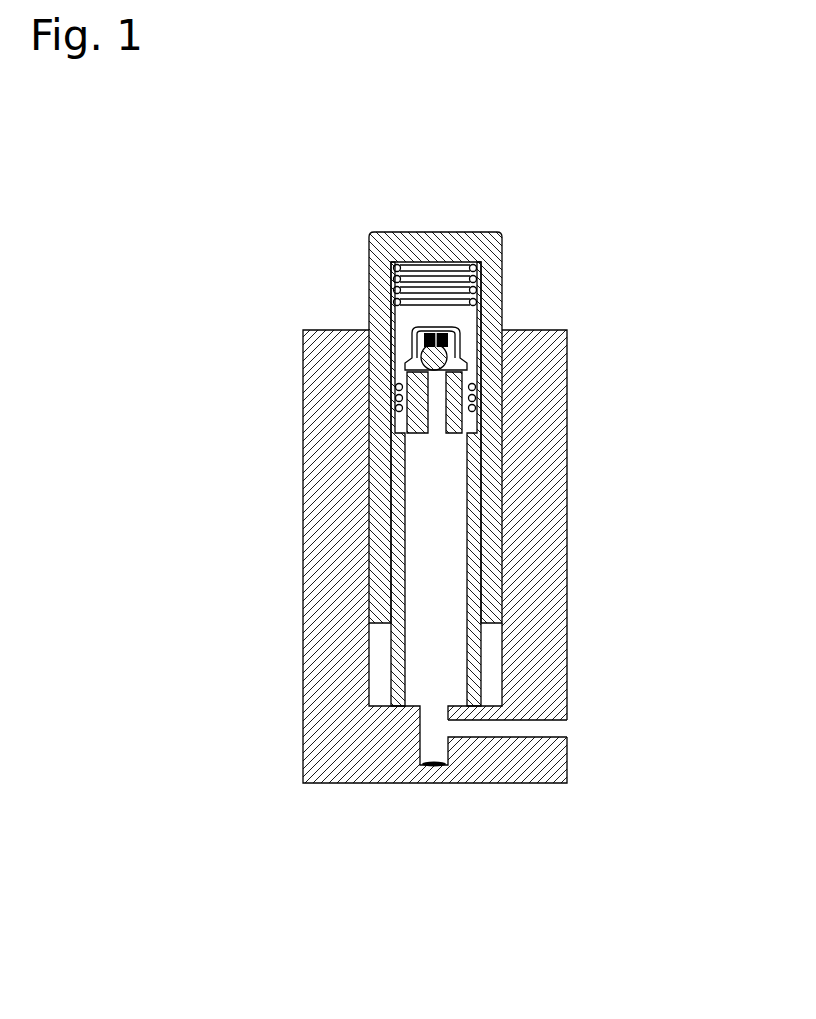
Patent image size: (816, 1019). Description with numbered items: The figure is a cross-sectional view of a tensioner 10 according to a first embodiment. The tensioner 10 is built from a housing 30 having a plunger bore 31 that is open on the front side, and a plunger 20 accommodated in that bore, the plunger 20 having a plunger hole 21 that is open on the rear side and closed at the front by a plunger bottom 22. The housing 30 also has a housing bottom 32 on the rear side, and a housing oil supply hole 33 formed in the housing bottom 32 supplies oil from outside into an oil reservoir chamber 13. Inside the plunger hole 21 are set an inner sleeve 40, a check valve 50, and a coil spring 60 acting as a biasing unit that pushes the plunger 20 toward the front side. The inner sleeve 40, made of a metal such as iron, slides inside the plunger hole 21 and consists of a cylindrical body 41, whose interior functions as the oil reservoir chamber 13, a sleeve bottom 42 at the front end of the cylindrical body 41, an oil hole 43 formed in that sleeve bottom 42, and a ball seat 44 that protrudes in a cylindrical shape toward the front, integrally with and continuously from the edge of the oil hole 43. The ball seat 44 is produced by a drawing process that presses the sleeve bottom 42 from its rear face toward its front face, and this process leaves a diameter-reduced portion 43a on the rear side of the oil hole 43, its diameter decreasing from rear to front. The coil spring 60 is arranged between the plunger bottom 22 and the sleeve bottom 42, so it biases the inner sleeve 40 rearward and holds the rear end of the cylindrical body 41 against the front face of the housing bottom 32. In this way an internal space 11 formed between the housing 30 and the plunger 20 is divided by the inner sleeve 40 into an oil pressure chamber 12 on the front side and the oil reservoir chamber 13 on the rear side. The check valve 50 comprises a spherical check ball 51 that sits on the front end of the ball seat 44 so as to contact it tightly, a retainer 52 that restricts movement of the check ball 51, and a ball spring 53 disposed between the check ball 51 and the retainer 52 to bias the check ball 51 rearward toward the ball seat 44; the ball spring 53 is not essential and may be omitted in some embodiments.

The tensioner 10 is at (152, 176).
The internal space 11 is at (180, 347).
The oil pressure chamber 12 is at (405, 320).
The oil reservoir chamber 13 is at (418, 472).
The plunger 20 is at (359, 271).
The plunger hole 21 is at (390, 593).
The plunger bottom 22 is at (437, 257).
The housing 30 is at (296, 739).
The plunger bore 31 is at (378, 676).
The housing bottom 32 is at (387, 737).
The housing oil supply hole 33 is at (435, 740).
The inner sleeve 40 is at (492, 647).
The cylindrical body 41 is at (473, 528).
The sleeve bottom 42 is at (468, 423).
The oil hole 43 is at (437, 436).
The diameter-reduced portion 43a is at (470, 445).
The ball seat 44 is at (455, 390).
The check valve 50 is at (668, 285).
The check ball 51 is at (435, 357).
The retainer 52 is at (460, 323).
The ball spring 53 is at (457, 341).
The coil spring 60 is at (477, 280).